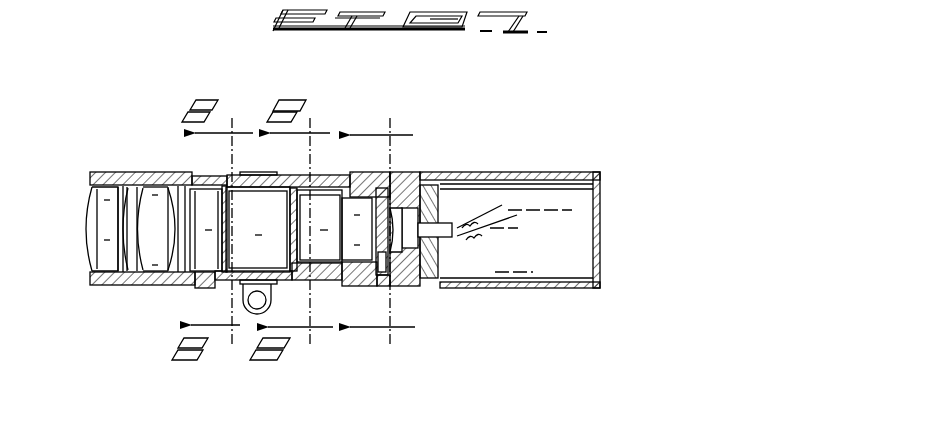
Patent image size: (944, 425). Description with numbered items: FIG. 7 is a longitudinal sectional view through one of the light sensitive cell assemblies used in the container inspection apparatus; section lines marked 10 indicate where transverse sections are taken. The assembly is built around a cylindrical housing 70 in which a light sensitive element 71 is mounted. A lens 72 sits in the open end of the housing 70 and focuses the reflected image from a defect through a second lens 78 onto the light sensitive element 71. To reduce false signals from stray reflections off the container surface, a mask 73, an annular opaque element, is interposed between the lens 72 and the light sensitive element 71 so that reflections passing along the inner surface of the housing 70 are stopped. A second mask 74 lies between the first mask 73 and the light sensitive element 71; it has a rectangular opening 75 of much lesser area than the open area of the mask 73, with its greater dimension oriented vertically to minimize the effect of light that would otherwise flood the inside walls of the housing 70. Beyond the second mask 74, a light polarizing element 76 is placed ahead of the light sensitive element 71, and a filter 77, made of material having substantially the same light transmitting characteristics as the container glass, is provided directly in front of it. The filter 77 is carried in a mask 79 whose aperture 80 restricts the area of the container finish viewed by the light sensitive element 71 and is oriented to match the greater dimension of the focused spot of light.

The section line 10 is at (293, 231).
The cylindrical housing 70 is at (226, 178).
The light sensitive element 71 is at (440, 228).
The lens 72 is at (98, 243).
The mask 73 is at (218, 265).
The second mask 74 is at (310, 250).
The rectangular opening 75 is at (293, 232).
The light polarizing element 76 is at (380, 283).
The filter 77 is at (443, 283).
The second lens 78 is at (155, 262).
The mask 79 is at (383, 190).
The aperture 80 is at (405, 197).